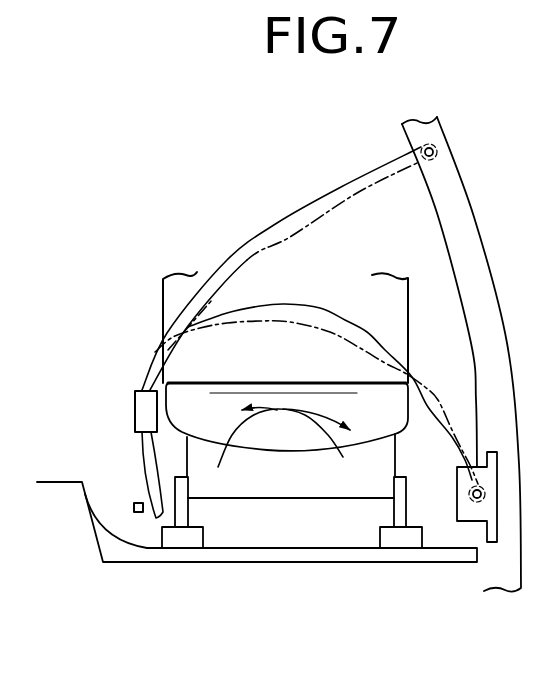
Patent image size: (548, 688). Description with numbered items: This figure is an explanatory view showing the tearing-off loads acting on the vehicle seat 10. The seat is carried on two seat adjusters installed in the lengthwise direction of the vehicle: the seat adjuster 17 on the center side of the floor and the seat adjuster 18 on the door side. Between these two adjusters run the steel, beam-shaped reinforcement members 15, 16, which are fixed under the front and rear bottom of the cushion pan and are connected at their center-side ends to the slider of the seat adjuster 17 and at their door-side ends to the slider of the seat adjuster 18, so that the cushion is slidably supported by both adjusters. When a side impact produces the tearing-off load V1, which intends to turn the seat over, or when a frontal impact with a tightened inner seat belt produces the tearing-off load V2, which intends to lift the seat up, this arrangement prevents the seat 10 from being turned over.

The vehicle seat 10 is at (150, 346).
The reinforcement member 15 is at (291, 482).
The reinforcement member 16 is at (290, 502).
The seat adjuster 17 is at (183, 563).
The seat adjuster 18 is at (400, 563).
The tearing-off load V1 is at (272, 408).
The tearing-off load V2 is at (240, 427).